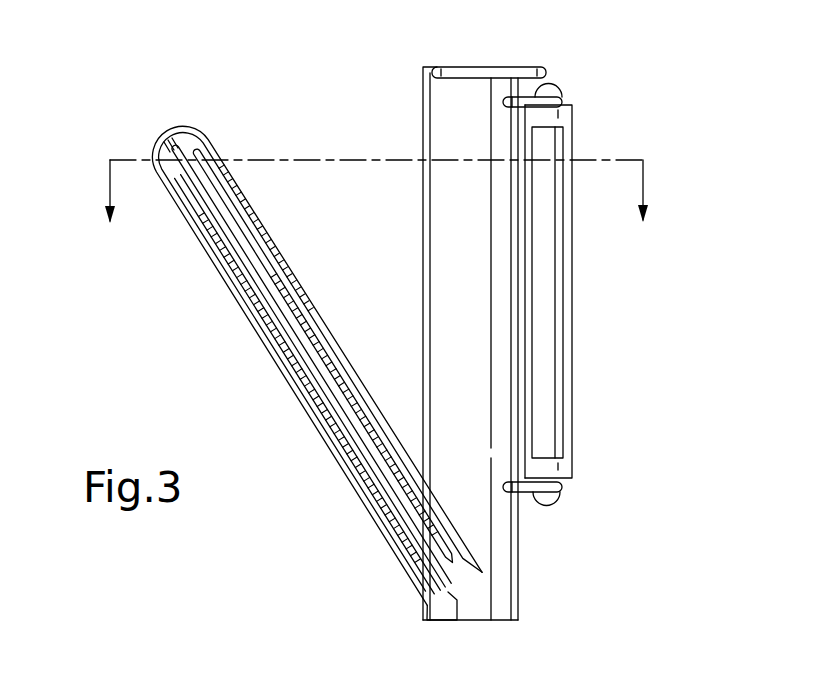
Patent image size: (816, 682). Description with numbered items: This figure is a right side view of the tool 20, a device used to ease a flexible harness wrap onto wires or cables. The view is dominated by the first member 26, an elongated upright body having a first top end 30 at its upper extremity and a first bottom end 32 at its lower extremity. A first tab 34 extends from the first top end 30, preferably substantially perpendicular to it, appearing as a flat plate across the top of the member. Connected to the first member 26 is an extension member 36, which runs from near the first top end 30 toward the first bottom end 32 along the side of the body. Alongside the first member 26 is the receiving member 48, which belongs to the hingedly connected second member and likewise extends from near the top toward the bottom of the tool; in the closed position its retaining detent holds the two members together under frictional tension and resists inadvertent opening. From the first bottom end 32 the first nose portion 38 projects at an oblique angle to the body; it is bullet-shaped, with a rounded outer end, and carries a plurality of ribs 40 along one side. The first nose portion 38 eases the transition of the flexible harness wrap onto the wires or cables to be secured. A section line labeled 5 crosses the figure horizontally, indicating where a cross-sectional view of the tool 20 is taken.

The section line 5- 5 is at (378, 210).
The tool 20 is at (309, 121).
The first member 26 is at (437, 226).
The first top end 30 is at (423, 112).
The first bottom end 32 is at (423, 610).
The first tab 34 is at (522, 67).
The extension member 36 is at (557, 83).
The first nose portion 38 is at (167, 128).
The ribs 40 is at (267, 315).
The receiving member 48 is at (573, 137).